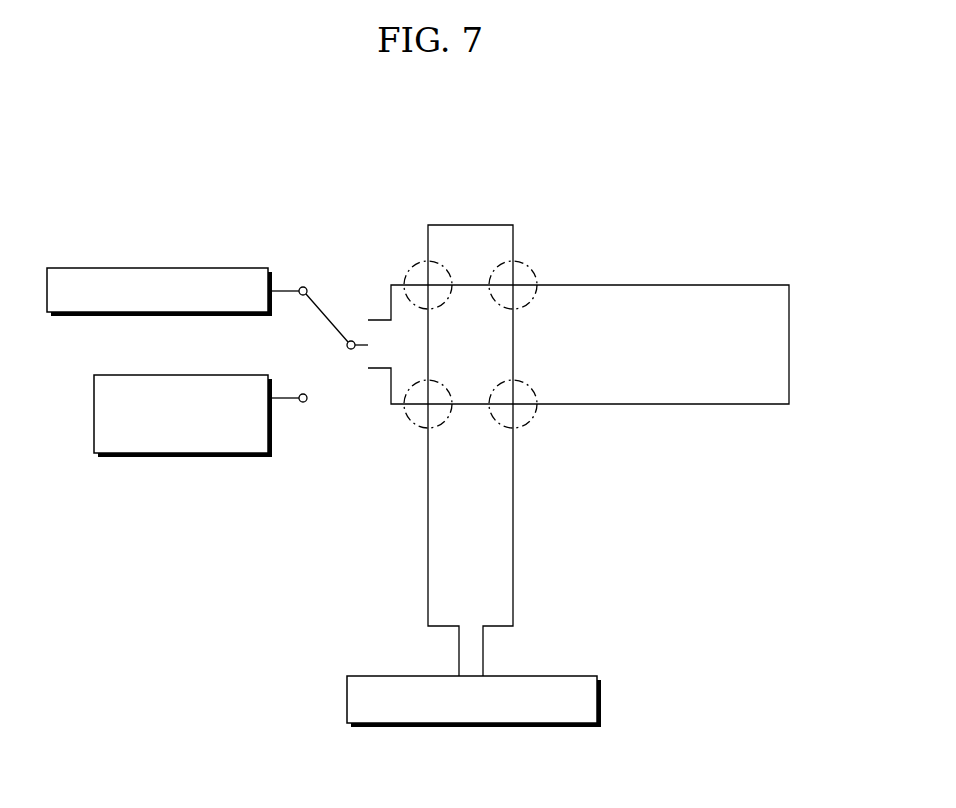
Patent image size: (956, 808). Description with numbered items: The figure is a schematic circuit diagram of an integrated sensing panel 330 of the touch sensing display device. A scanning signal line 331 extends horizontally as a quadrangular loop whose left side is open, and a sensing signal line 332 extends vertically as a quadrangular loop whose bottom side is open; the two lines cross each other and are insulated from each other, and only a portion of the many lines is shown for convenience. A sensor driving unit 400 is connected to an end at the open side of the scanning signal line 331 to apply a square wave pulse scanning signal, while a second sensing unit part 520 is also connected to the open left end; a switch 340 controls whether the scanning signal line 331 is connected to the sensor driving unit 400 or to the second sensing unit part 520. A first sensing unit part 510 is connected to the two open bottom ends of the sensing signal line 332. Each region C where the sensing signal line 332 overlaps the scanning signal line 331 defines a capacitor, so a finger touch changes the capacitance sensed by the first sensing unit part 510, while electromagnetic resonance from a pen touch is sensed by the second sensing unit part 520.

The integrated sensing panel 330 is at (578, 398).
The scanning signal line 331 is at (703, 405).
The sensing signal line 332 is at (514, 557).
The switch 340 is at (343, 301).
The sensor driving unit 400 is at (182, 267).
The first sensing unit part 510 is at (474, 726).
The second sensing unit part 520 is at (137, 455).
The region C is at (534, 271).